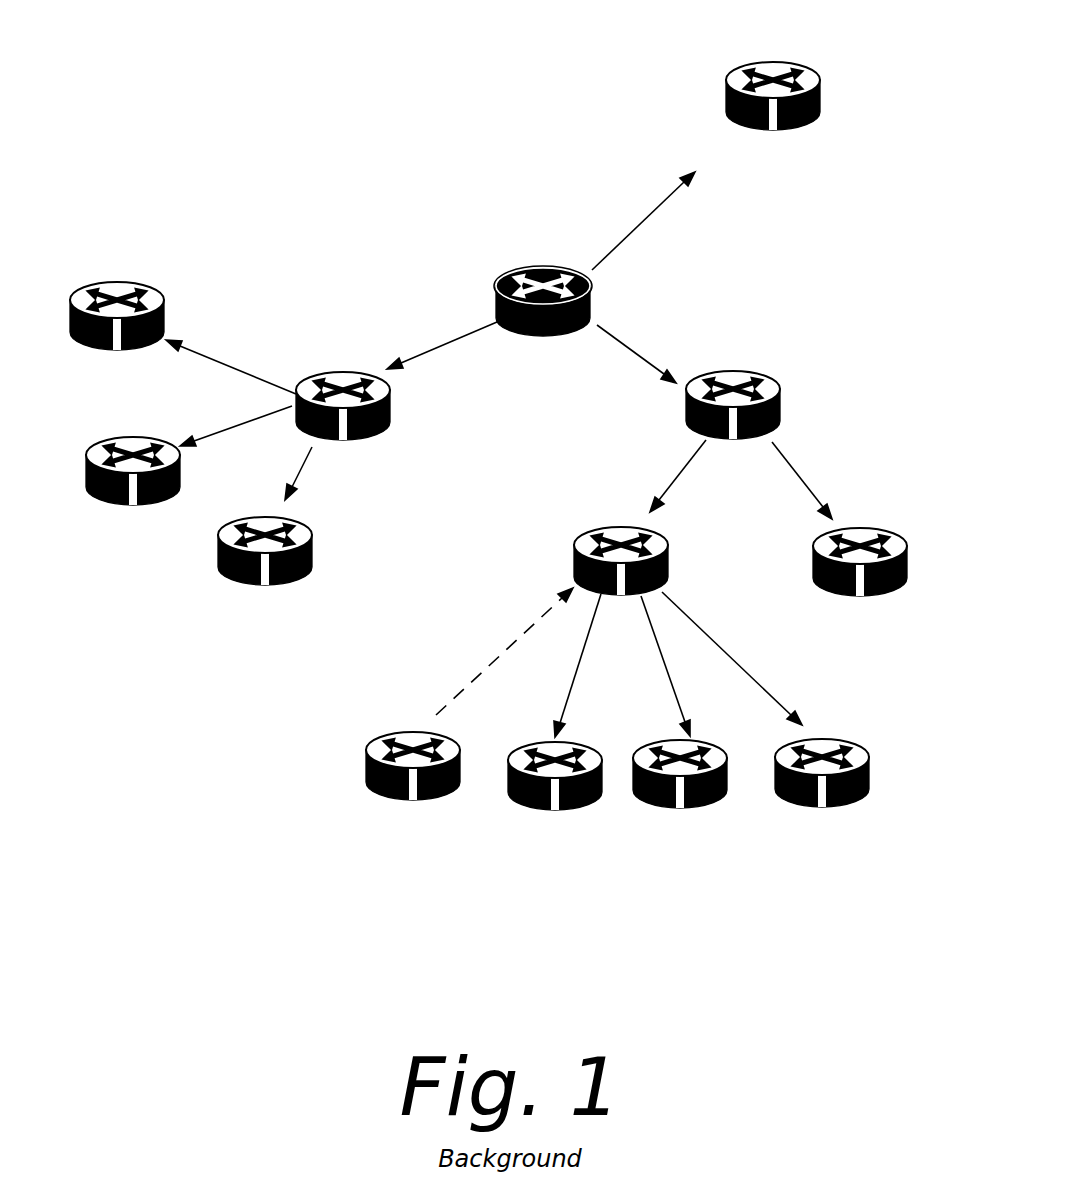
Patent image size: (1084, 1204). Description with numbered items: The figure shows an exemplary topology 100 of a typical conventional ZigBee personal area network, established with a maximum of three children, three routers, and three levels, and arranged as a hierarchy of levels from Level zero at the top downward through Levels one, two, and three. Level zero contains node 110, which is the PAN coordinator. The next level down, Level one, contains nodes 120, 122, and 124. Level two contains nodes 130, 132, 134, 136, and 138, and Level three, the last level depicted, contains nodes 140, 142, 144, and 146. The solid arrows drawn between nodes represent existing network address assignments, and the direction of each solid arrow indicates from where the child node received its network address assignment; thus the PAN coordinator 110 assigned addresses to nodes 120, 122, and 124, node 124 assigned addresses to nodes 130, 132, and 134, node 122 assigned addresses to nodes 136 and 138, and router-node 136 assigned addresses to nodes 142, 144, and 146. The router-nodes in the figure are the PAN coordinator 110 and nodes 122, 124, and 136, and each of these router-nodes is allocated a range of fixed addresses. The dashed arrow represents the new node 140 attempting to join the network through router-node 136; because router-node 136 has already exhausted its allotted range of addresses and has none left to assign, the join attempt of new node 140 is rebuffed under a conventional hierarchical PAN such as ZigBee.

The topology 100 is at (239, 889).
The PAN coordinator node 110 is at (524, 268).
The node 120 is at (808, 64).
The node 122 is at (765, 384).
The node 124 is at (358, 370).
The node 130 is at (100, 282).
The node 132 is at (127, 440).
The node 134 is at (218, 575).
The router-node 136 is at (578, 526).
The node 138 is at (845, 598).
The new node 140 is at (372, 744).
The node 142 is at (590, 805).
The node 144 is at (706, 808).
The node 146 is at (833, 808).